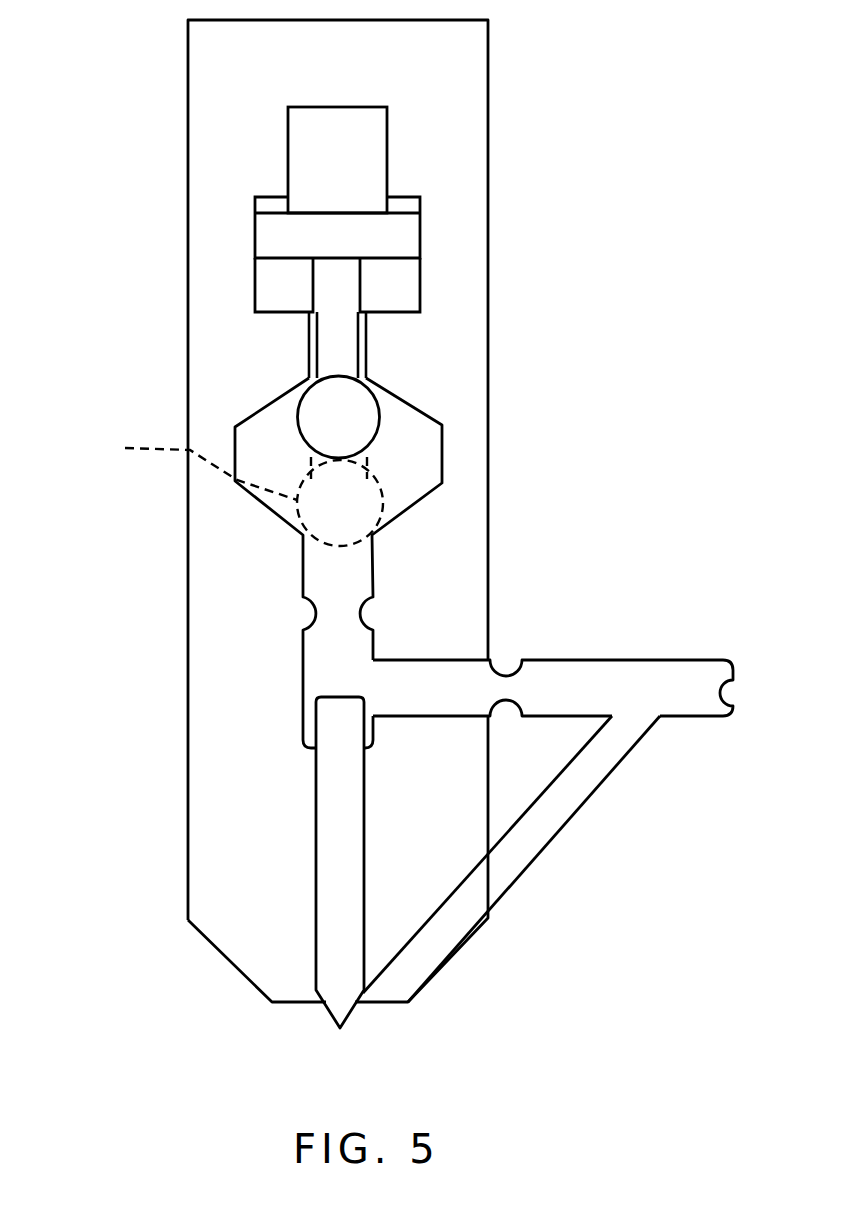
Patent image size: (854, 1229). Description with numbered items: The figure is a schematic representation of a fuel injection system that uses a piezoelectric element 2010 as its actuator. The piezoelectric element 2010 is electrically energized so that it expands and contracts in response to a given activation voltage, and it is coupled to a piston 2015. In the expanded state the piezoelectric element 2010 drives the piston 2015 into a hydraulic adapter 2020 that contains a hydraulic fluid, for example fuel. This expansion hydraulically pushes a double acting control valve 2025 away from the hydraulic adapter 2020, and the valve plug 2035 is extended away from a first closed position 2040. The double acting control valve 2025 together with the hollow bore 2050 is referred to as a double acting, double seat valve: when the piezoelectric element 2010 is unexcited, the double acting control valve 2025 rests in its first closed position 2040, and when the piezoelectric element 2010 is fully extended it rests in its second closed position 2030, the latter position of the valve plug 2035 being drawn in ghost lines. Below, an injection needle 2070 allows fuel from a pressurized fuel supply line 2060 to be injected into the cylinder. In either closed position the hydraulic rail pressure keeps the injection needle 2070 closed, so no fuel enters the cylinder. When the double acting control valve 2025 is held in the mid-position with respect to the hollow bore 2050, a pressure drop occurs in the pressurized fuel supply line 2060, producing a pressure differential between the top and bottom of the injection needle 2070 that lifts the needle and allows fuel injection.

The piezoelectric element 2010 is at (378, 128).
The piston 2015 is at (270, 236).
The hydraulic adapter 2020 is at (270, 282).
The double acting control valve 2025 is at (340, 350).
The second closed position 2030 is at (413, 505).
The valve plug 2035 is at (297, 421).
The first closed position 2040 is at (287, 403).
The hollow bore 2050 is at (442, 453).
The pressurized fuel supply line 2060 is at (660, 668).
The injection needle 2070 is at (317, 905).